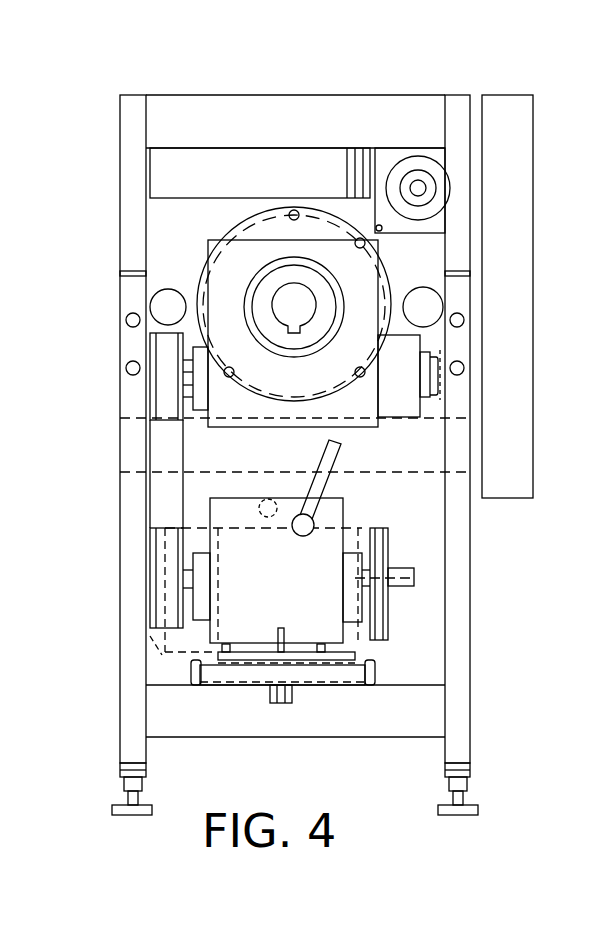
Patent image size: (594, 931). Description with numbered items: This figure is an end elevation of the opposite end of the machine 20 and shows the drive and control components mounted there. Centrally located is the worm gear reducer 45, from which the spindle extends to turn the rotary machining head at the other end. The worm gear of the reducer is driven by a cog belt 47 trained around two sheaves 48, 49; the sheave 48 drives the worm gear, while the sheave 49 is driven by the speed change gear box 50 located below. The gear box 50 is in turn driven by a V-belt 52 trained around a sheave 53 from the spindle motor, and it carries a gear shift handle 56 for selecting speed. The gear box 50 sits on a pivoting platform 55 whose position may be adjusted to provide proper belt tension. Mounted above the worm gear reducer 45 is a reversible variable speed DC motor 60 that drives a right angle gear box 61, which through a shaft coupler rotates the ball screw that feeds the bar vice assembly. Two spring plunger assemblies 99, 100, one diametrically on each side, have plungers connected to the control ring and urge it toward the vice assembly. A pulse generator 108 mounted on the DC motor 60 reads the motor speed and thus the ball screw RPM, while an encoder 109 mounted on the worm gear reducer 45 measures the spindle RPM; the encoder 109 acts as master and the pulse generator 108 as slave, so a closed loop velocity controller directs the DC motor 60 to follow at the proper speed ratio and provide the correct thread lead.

The frame assembly 20 is at (480, 72).
The worm gear reducer 45 is at (208, 262).
The cog belt 47 is at (165, 447).
The sheave 48 is at (152, 378).
The sheave 49 is at (150, 604).
The speed change gear box 50 is at (348, 503).
The V-belt 52 is at (380, 645).
The sheave 53 is at (388, 620).
The pivoting platform 55 is at (238, 665).
The gear shift handle 56 is at (318, 453).
The reversible variable speed DC motor 60 is at (293, 150).
The right angle gear box 61 is at (418, 158).
The spring plunger assembly 99 is at (152, 302).
The spring plunger assembly 100 is at (430, 300).
The pulse generator 108 is at (352, 160).
The encoder 109 is at (440, 355).